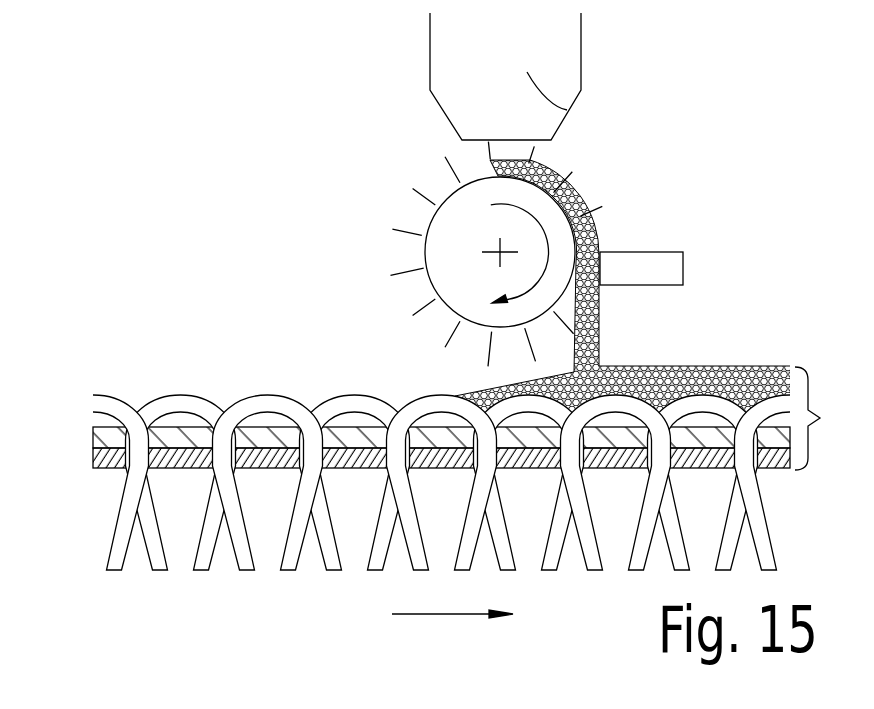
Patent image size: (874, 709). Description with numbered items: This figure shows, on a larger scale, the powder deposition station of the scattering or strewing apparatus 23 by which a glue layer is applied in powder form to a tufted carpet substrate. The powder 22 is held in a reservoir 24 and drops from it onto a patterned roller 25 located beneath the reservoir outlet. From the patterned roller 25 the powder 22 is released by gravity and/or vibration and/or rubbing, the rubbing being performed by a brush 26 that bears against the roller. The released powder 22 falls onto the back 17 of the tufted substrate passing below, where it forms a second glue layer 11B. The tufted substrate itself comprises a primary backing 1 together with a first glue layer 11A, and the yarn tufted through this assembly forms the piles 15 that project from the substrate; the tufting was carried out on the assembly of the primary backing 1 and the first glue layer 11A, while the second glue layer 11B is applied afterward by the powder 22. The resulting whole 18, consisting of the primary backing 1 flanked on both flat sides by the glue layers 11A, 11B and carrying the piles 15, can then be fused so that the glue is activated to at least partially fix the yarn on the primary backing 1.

The primary backing 1 is at (108, 441).
The first glue layer 11A is at (153, 492).
The second glue layer 11B is at (695, 378).
The piles 15 is at (157, 560).
The back 17 is at (172, 423).
The whole 18 is at (822, 419).
The powder 22 is at (600, 238).
The scattering or strewing apparatus 23 is at (318, 221).
The reservoir 24 is at (567, 110).
The patterned roller 25 is at (433, 278).
The brush 26 is at (672, 268).